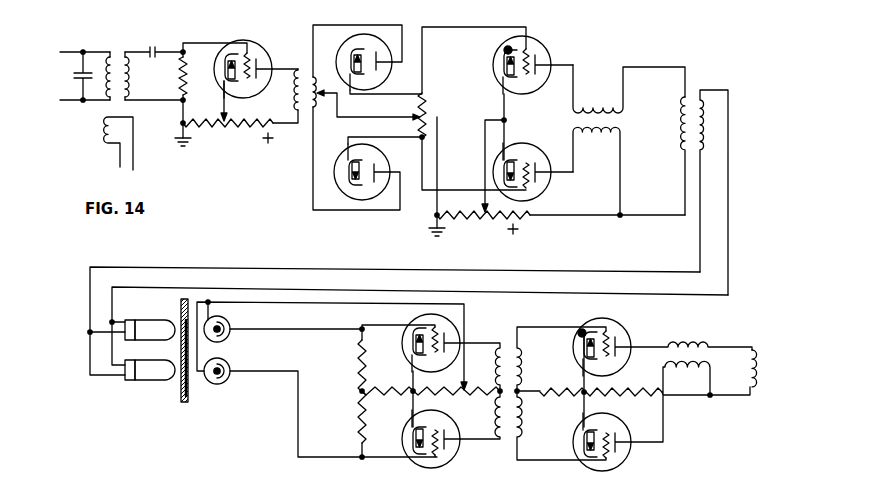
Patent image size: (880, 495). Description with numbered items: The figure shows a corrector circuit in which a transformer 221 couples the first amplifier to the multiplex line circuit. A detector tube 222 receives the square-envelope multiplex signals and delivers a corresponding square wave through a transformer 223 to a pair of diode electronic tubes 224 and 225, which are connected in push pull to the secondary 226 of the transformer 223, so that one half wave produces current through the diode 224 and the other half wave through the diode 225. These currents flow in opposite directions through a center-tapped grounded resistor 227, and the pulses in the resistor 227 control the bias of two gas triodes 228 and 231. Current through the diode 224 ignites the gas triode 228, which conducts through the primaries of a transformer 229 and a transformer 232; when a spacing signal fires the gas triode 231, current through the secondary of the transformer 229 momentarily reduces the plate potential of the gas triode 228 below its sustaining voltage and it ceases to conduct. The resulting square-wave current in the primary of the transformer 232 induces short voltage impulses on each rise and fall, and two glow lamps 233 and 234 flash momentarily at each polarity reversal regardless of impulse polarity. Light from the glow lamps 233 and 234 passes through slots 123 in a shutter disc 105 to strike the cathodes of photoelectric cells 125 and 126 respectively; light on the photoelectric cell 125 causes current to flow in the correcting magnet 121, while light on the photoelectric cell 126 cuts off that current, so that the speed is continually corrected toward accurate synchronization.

The transformer 221 is at (118, 44).
The detector tube 222 is at (255, 40).
The transformer 223 is at (305, 131).
The diode electronic tube 224 is at (366, 14).
The diode electronic tube 225 is at (334, 185).
The secondary 226 is at (315, 78).
The resistor 227 is at (425, 112).
The gas triode 228 is at (543, 40).
The transformer 229 is at (597, 117).
The gas triode 231 is at (543, 197).
The transformer 232 is at (695, 100).
The glow lamp 233 is at (160, 302).
The glow lamp 234 is at (153, 380).
The slot 123 is at (181, 338).
The shutter disc 105 is at (189, 400).
The photoelectric cell 125 is at (229, 318).
The photoelectric cell 126 is at (222, 383).
The magnet 121 is at (757, 362).